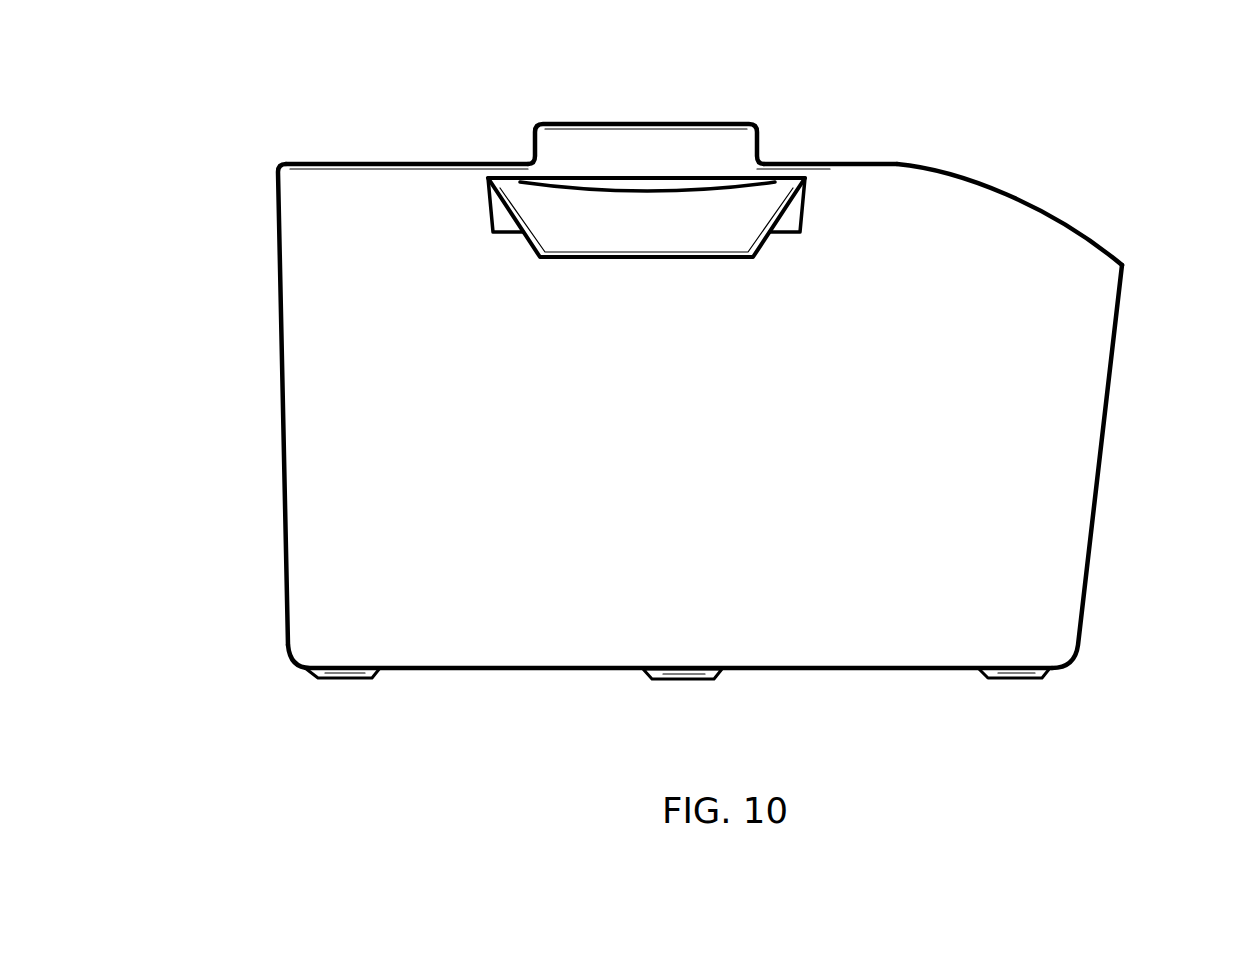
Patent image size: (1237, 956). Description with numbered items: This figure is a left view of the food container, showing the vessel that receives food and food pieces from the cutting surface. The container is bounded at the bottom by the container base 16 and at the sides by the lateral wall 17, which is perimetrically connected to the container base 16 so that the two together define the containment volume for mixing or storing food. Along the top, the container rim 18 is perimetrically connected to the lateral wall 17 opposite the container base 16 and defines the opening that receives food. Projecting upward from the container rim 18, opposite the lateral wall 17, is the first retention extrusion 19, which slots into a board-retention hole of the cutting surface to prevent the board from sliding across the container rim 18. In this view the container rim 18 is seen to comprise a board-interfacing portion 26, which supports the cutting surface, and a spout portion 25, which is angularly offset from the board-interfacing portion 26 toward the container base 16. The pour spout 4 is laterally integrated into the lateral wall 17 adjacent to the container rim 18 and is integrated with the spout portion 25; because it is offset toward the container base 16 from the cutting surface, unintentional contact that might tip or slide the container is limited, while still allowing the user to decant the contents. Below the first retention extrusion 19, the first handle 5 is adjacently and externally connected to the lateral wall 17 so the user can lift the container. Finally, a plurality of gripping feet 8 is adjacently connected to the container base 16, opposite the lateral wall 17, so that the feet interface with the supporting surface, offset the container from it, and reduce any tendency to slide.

The container rim 18 is at (710, 387).
The lateral wall 17 is at (325, 470).
The board-interfacing portion 26 is at (850, 162).
The first retention extrusion 19 is at (605, 148).
The spout portion 25 is at (1070, 218).
The pour spout 4 is at (1108, 300).
The container base 16 is at (533, 669).
The plurality of gripping feet 8 is at (337, 678).
The first handle 5 is at (640, 223).